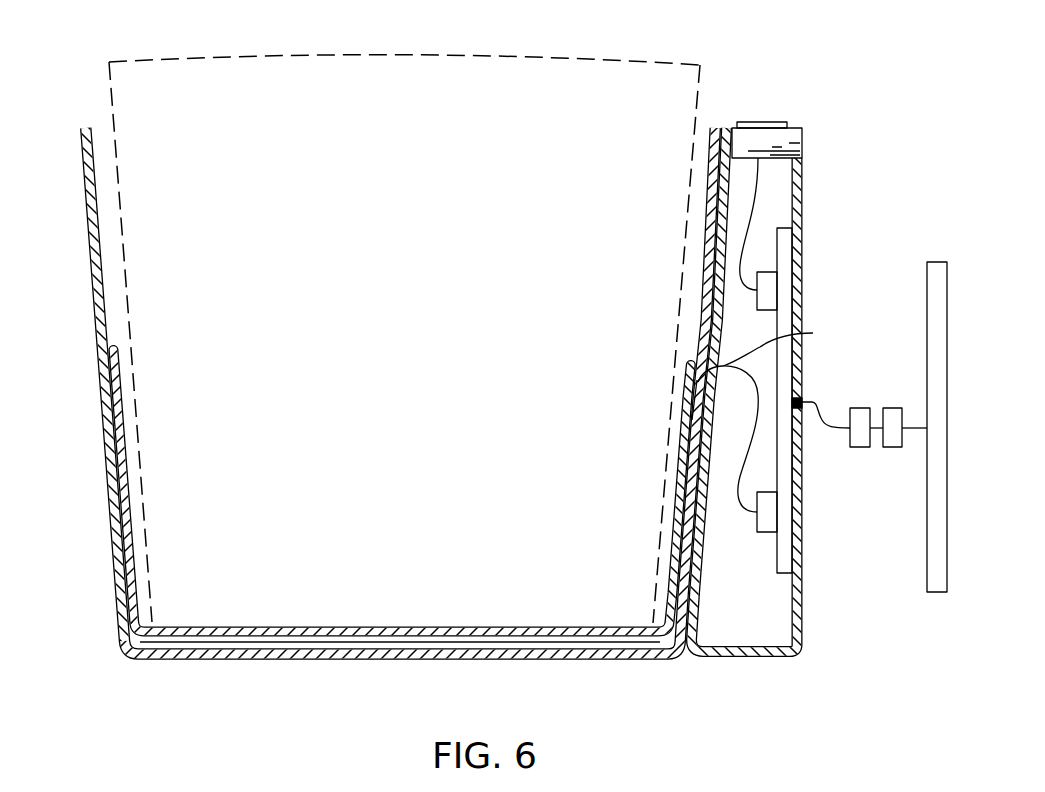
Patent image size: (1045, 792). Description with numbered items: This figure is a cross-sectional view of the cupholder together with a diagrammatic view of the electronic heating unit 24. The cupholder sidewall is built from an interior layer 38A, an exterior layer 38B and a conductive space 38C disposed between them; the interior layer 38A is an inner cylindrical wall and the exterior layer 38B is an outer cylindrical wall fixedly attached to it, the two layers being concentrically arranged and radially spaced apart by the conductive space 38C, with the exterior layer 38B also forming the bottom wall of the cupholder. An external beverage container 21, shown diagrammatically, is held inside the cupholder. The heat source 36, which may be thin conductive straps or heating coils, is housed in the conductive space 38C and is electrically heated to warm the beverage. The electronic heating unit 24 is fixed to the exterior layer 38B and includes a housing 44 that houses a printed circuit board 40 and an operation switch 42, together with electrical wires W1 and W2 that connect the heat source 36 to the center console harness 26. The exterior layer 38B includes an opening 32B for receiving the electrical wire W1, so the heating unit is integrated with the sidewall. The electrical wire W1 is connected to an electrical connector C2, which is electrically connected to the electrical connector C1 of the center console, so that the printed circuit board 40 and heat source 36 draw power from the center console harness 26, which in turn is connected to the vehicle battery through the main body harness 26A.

The external beverage container 21 is at (608, 50).
The electronic heating unit 24 is at (808, 190).
The center console harness 26 is at (913, 426).
The main body harness 26A is at (927, 570).
The opening 32B is at (690, 352).
The heat source 36 is at (98, 380).
The interior layer 38A is at (102, 185).
The exterior layer 38B is at (80, 168).
The conductive space 38C is at (113, 375).
The printed circuit board 40 is at (783, 251).
The operation switch 42 is at (776, 122).
The housing 44 is at (803, 523).
The electrical wire W1 is at (818, 410).
The electrical wire W2 is at (581, 682).
The electrical connector C1 is at (888, 449).
The electrical connector C2 is at (858, 449).